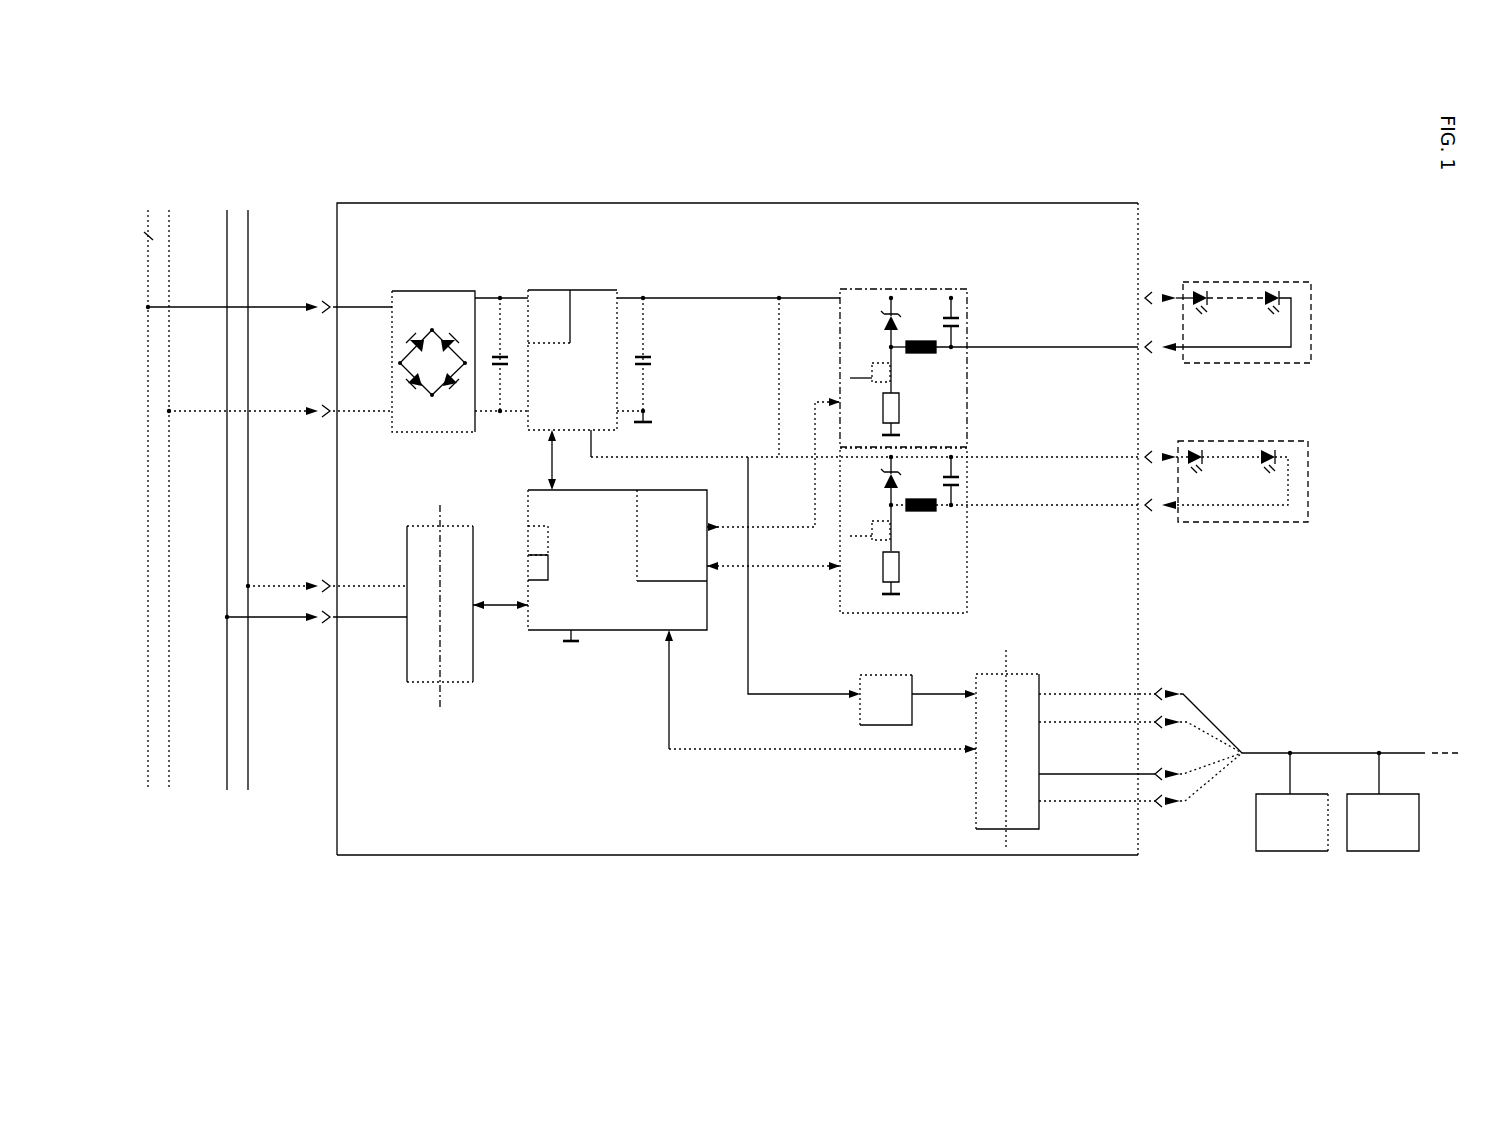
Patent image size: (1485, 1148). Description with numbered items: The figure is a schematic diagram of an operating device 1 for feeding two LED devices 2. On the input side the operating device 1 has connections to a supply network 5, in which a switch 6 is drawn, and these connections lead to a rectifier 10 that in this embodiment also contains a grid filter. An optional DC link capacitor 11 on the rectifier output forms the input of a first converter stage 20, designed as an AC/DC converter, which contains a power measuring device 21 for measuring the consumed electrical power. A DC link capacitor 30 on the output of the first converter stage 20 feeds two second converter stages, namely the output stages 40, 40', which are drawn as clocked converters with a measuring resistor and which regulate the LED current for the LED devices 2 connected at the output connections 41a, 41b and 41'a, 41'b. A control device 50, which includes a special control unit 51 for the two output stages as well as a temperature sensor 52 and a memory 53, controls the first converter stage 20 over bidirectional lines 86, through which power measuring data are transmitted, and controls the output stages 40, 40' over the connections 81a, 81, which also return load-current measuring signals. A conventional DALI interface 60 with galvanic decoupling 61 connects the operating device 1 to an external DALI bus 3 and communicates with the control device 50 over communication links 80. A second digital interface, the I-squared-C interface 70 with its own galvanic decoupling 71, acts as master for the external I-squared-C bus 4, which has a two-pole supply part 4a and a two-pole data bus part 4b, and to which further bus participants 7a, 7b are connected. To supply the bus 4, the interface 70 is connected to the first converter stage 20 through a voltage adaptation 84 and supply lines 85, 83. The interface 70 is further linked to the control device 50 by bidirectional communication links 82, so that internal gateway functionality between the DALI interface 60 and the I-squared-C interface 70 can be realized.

The operating device 1 is at (462, 203).
The LED device 2 is at (1258, 282).
The DALI bus 3 is at (238, 226).
The I²C bus 4 is at (1330, 753).
The supply part 4a is at (1196, 705).
The data bus part 4b is at (1186, 790).
The supply network 5 is at (152, 184).
The switch 6 is at (150, 236).
The I²C bus participant 7a is at (1285, 845).
The I²C bus participant 7b is at (1365, 840).
The rectifier 10 is at (410, 291).
The DC link capacitor 11 is at (500, 357).
The first converter stage 20 is at (578, 329).
The power measuring device 21 is at (540, 305).
The DC link capacitor 30 is at (650, 352).
The output stage 40 is at (989, 340).
The output stage 40' is at (989, 509).
The output connection 41a is at (1143, 292).
The output connection 41b is at (1142, 352).
The output connection 41'a is at (1169, 432).
The output connection 41'b is at (1170, 534).
The control device 50 is at (592, 550).
The control unit 51 is at (650, 515).
The temperature sensor 52 is at (530, 545).
The memory 53 is at (530, 573).
The DALI interface 60 is at (439, 628).
The galvanic decoupling 61 is at (442, 700).
The I²C interface 70 is at (1023, 726).
The galvanic decoupling 71 is at (1007, 650).
The communication link 80 is at (495, 608).
The communication link 81 is at (765, 568).
The communication link 81a is at (762, 527).
The communication link 82 is at (718, 750).
The supply line 83 is at (655, 457).
The voltage adaptation 84 is at (872, 675).
The supply line 85 is at (930, 694).
The bidirectional line 86 is at (556, 478).